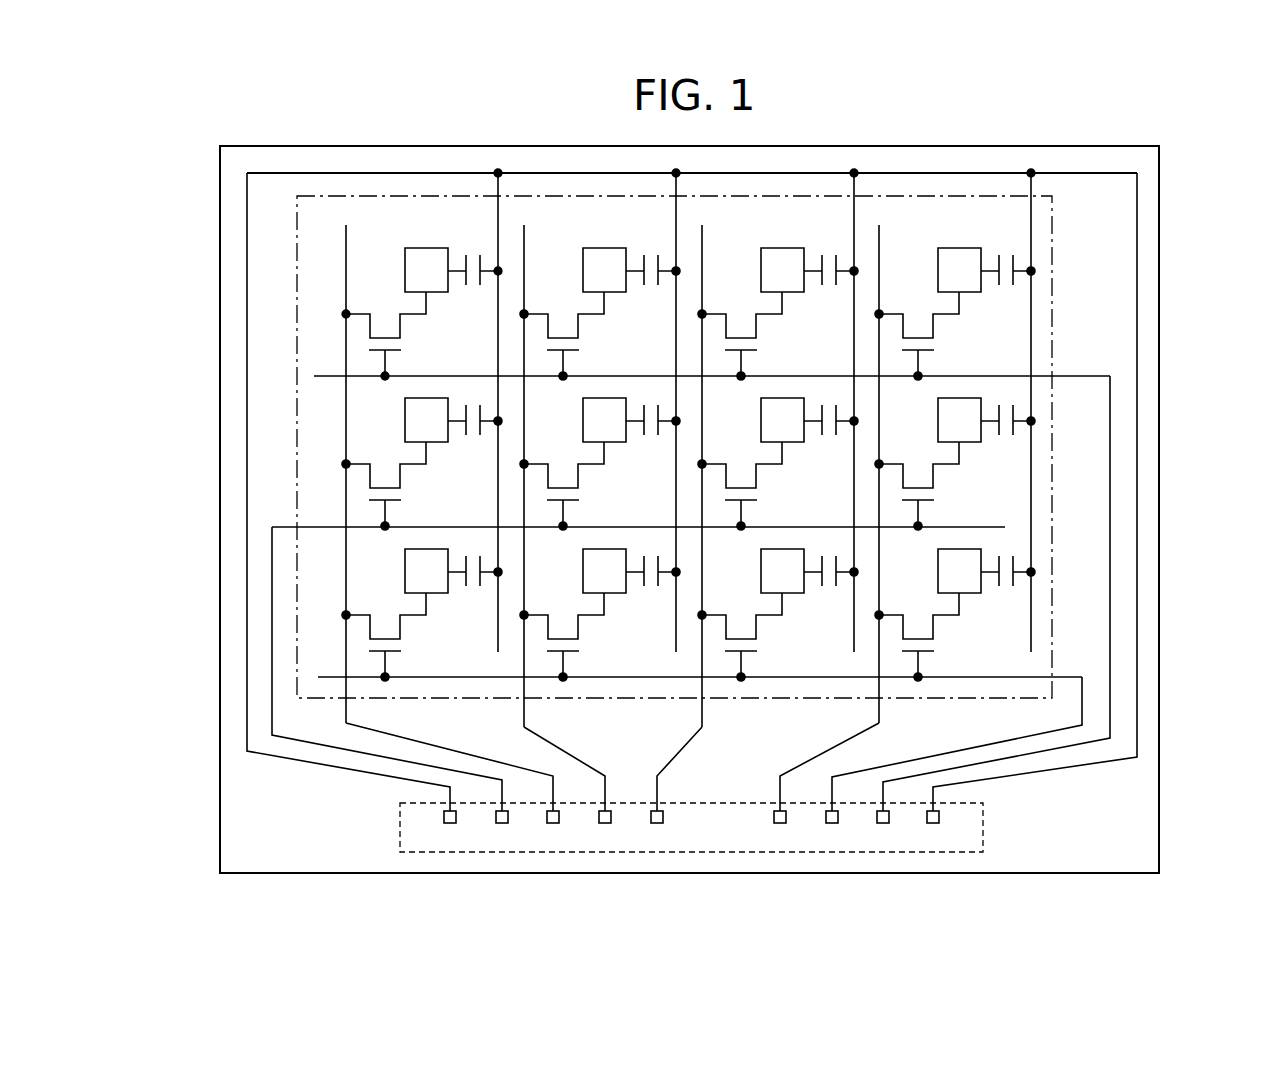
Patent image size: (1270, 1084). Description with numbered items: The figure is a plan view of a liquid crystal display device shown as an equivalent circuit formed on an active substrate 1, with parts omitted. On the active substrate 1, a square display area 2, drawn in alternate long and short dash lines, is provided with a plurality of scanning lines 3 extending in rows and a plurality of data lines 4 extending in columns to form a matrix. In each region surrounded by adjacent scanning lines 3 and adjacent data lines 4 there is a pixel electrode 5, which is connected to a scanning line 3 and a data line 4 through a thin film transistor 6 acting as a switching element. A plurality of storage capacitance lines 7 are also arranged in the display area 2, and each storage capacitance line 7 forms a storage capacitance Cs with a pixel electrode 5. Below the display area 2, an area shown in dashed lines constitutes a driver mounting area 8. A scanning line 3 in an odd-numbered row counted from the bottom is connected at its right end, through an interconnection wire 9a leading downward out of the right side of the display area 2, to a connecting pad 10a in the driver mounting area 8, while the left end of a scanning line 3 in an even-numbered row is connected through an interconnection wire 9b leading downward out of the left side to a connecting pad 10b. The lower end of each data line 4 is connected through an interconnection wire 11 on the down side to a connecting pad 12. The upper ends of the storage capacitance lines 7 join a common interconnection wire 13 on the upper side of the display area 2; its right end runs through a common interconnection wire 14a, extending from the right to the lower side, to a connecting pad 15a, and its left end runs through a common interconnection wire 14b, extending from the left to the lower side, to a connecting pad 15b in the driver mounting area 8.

The active substrate 1 is at (1168, 187).
The display area 2 is at (906, 190).
The scanning line 3 is at (975, 376).
The data line 4 is at (346, 561).
The pixel electrode 5 is at (430, 258).
The thin film transistor 6 is at (387, 314).
The storage capacitance line 7 is at (498, 622).
The driver mounting area 8 is at (970, 823).
The interconnection wire 9a is at (1110, 572).
The interconnection wire 9b is at (272, 626).
The connecting pad 10a is at (883, 823).
The connecting pad 10b is at (502, 823).
The interconnection wire 11 is at (420, 742).
The connecting pad 12 is at (553, 823).
The common interconnection wire 13 is at (810, 172).
The common interconnection wire 14a is at (1137, 312).
The common interconnection wire 14b is at (247, 407).
The common terminal 15a is at (933, 823).
The connecting pad 15b is at (450, 823).
The storage capacitance Cs is at (475, 285).